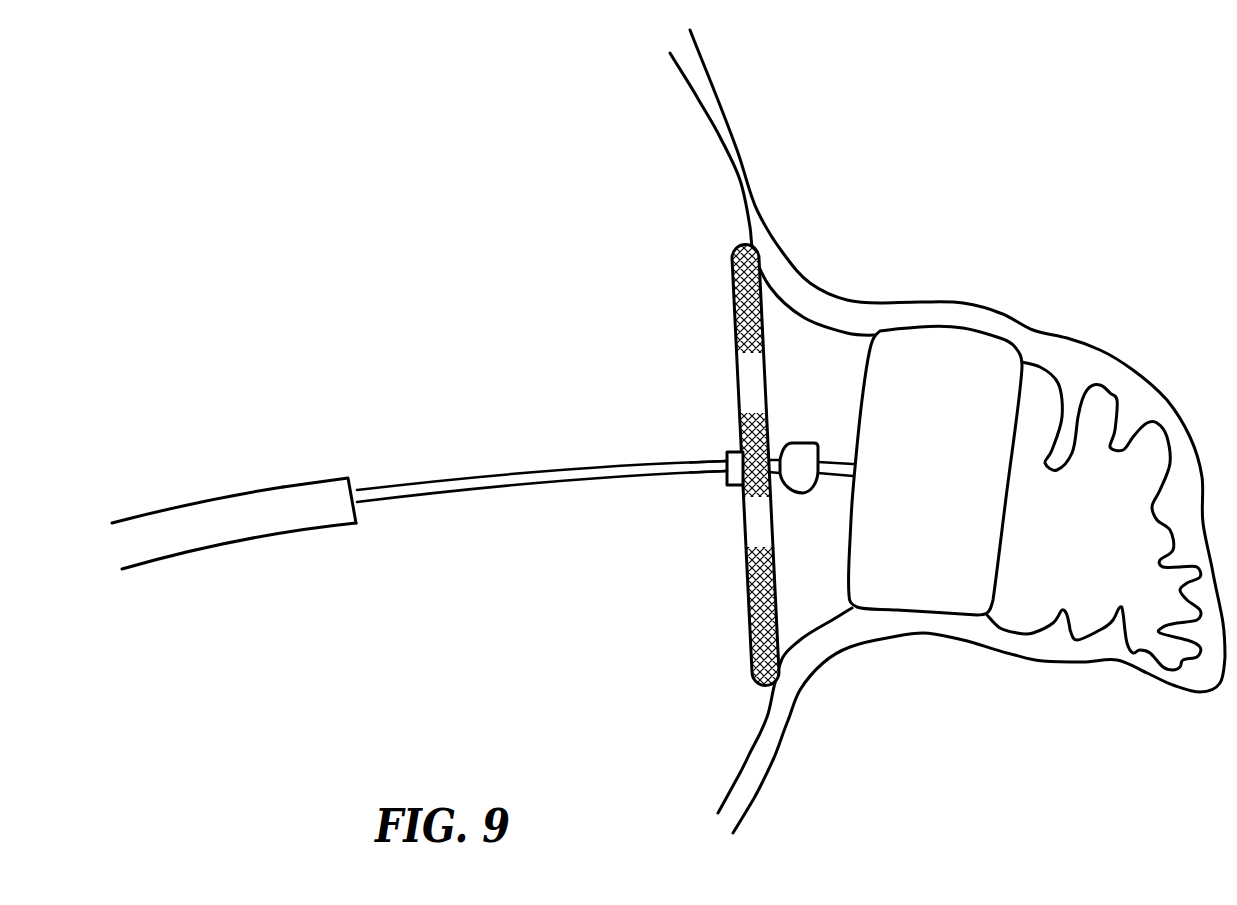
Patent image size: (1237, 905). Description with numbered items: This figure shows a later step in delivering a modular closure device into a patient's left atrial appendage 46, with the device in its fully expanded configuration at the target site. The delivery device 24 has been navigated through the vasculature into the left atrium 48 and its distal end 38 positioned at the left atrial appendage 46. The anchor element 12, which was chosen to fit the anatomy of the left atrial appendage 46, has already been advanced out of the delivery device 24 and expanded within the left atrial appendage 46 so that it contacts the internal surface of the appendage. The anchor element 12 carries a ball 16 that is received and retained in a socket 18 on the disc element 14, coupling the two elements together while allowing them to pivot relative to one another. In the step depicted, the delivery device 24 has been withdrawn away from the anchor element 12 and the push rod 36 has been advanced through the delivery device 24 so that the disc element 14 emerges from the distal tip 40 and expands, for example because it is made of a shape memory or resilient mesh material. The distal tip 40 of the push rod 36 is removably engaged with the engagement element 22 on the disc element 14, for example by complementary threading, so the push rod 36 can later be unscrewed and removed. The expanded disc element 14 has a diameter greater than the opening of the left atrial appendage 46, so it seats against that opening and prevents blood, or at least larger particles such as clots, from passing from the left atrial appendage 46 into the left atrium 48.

The anchor element 12 is at (940, 492).
The disc element 14 is at (747, 615).
The ball 16 is at (821, 479).
The socket 18 is at (797, 451).
The engagement element 22 is at (737, 451).
The delivery device 24 is at (237, 543).
The push rod 36 is at (445, 486).
The distal end of the delivery device 38 is at (285, 487).
The distal tip 40 is at (700, 462).
The left atrial appendage 46 is at (1075, 340).
The left atrium 48 is at (560, 226).